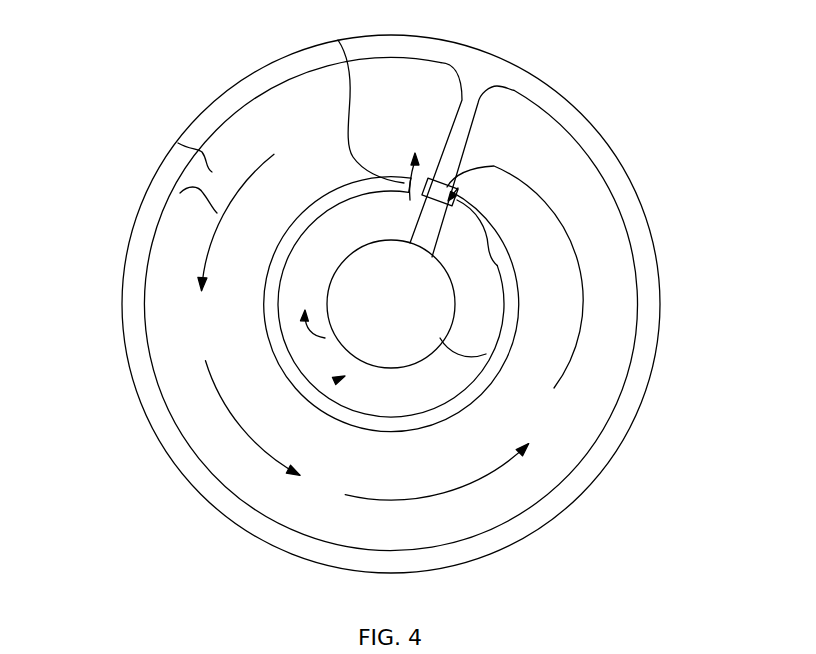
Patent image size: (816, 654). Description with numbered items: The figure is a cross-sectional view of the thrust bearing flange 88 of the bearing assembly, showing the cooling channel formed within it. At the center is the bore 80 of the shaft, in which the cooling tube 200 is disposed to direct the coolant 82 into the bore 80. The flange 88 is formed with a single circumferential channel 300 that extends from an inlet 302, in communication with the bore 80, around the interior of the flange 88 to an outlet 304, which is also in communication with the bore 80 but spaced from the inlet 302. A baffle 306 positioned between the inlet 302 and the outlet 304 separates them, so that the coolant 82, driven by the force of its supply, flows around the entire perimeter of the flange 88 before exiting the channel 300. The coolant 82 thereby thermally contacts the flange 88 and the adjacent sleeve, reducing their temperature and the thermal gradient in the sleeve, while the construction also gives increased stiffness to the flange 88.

The bore 80 is at (340, 378).
The coolant 82 is at (150, 203).
The thrust bearing flange 88 is at (233, 87).
The cooling tube 200 is at (493, 355).
The channel 300 is at (178, 143).
The inlet 302 is at (338, 40).
The outlet 304 is at (452, 192).
The baffle 306 is at (440, 227).